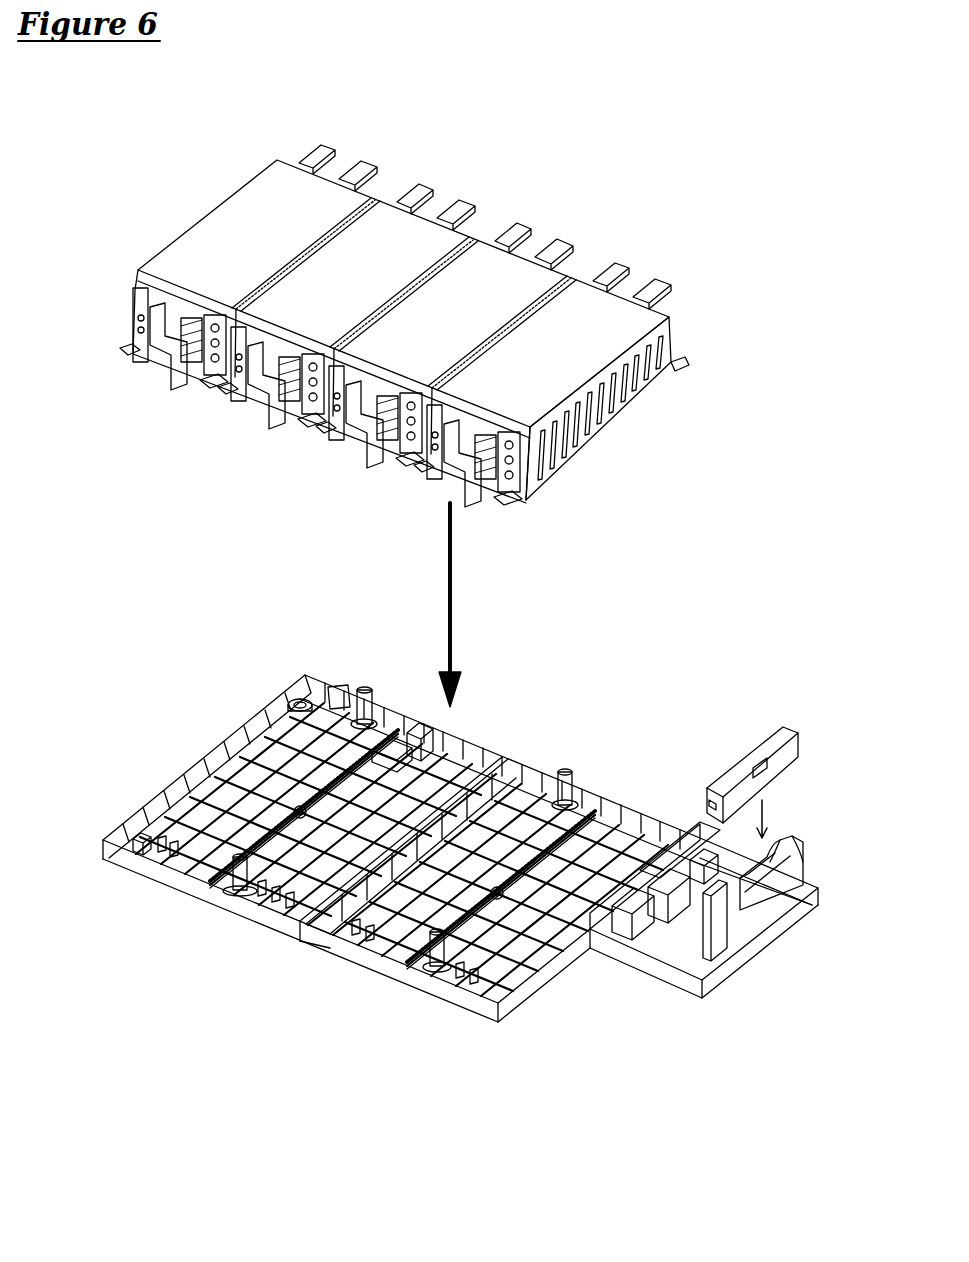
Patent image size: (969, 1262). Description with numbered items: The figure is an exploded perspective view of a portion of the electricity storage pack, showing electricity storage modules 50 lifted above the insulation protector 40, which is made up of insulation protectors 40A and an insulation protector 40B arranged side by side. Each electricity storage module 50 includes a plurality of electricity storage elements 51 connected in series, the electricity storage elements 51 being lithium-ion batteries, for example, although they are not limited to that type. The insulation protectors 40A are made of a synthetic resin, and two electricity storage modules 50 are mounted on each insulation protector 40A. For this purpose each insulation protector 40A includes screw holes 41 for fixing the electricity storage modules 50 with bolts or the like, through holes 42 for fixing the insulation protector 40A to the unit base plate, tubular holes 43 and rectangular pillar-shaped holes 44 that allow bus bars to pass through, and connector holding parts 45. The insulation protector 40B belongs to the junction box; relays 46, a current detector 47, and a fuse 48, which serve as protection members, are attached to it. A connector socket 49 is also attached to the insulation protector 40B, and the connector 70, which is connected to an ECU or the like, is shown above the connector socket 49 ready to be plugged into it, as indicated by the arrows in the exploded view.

The insulation protector 40 is at (477, 879).
The insulation protector 40A is at (247, 907).
The insulation protector 40B is at (725, 882).
The screw holes 41 is at (293, 698).
The through holes 42 is at (312, 693).
The tubular holes 43 is at (375, 705).
The rectangular pillar-shaped holes 44 is at (425, 746).
The connector holding parts 45 is at (136, 849).
The relays 46 is at (664, 892).
The current detector 47 is at (707, 840).
The fuse 48 is at (681, 948).
The connector socket 49 is at (793, 866).
The electricity storage module 50 is at (240, 214).
The electricity storage elements 51 is at (660, 348).
The connector 70 is at (758, 752).